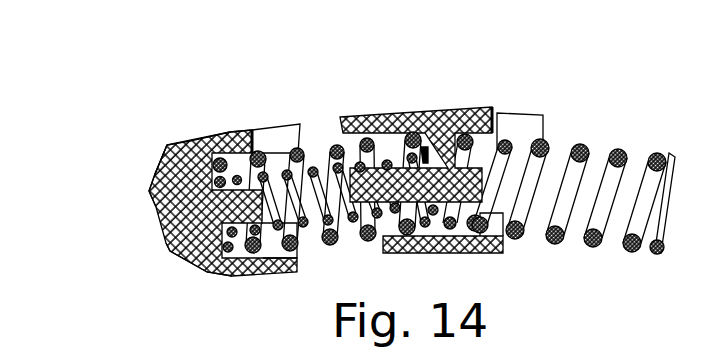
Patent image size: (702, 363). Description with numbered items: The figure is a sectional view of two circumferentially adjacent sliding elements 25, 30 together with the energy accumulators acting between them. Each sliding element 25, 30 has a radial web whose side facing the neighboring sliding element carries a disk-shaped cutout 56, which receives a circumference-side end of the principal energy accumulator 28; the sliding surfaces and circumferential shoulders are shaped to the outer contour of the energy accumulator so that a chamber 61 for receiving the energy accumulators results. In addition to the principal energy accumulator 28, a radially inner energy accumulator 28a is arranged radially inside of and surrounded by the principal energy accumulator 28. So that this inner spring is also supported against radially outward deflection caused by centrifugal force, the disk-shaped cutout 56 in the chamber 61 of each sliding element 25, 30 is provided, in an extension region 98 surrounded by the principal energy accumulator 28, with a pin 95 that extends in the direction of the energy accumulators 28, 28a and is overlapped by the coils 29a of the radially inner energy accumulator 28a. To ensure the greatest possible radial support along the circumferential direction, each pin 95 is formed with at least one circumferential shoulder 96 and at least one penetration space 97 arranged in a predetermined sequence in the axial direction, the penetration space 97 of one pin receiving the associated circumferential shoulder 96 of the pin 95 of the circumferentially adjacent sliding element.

The sliding element 25 is at (203, 158).
The principal energy accumulator 28 is at (253, 250).
The radially inner energy accumulator 28a is at (265, 170).
The coils 29a is at (213, 178).
The sliding element 30 is at (438, 125).
The disk-shaped cutout 56 is at (213, 242).
The chamber 61 is at (238, 163).
The pin 95 is at (245, 209).
The circumferential shoulder 96 is at (371, 150).
The penetration space 97 is at (490, 187).
The extension region 98 is at (170, 153).